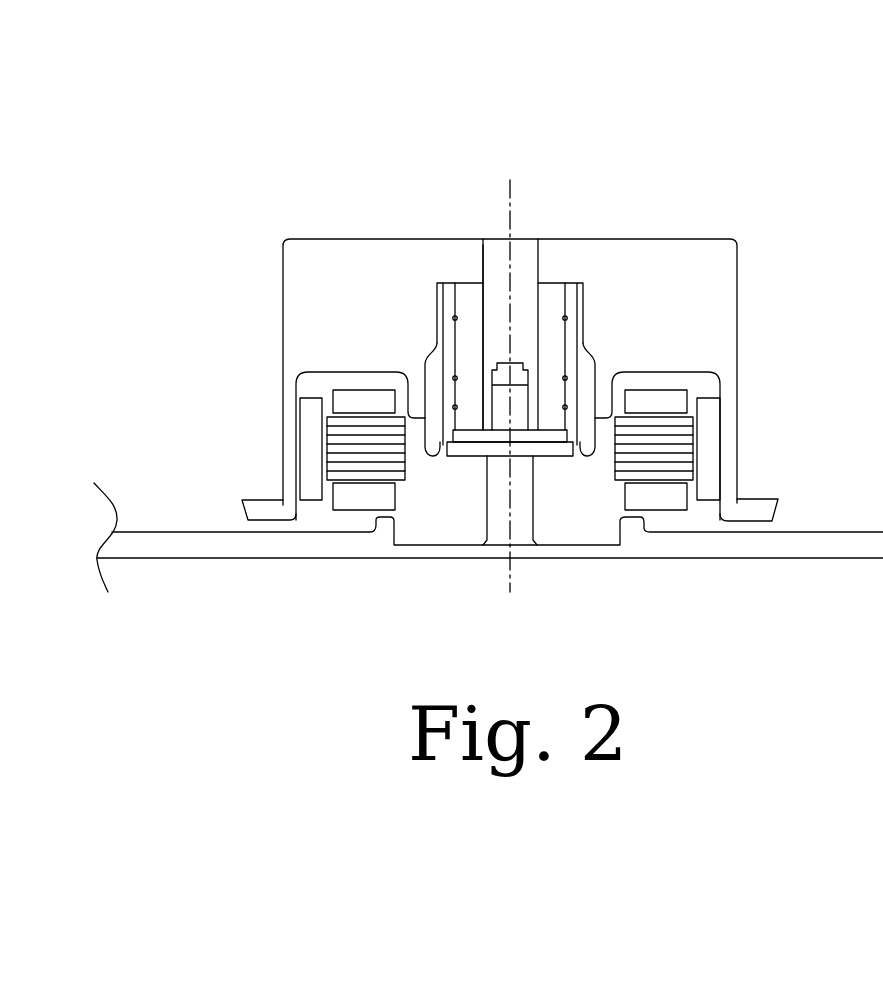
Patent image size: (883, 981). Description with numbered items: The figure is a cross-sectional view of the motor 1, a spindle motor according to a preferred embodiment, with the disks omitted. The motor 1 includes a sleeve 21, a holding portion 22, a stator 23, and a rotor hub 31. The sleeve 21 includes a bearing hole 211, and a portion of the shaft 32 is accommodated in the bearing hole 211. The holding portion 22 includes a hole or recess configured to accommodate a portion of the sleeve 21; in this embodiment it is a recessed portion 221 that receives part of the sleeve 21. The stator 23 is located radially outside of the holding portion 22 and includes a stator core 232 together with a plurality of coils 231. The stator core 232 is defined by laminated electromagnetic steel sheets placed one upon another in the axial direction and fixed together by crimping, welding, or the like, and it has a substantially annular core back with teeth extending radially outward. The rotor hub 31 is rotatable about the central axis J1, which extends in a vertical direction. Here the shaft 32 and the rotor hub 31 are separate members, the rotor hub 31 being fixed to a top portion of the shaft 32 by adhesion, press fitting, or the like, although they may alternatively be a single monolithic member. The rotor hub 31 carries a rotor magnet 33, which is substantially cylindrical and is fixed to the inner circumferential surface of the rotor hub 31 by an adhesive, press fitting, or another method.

The motor 1 is at (125, 94).
The sleeve 21 is at (470, 359).
The bearing hole 211 is at (502, 254).
The holding portion 22 is at (437, 388).
The recessed portion 221 is at (452, 306).
The stator 23 is at (193, 395).
The coils 231 is at (355, 495).
The stator core 232 is at (362, 430).
The rotor hub 31 is at (718, 276).
The shaft 32 is at (520, 256).
The rotor magnet 33 is at (703, 465).
The central axis J1 is at (510, 186).